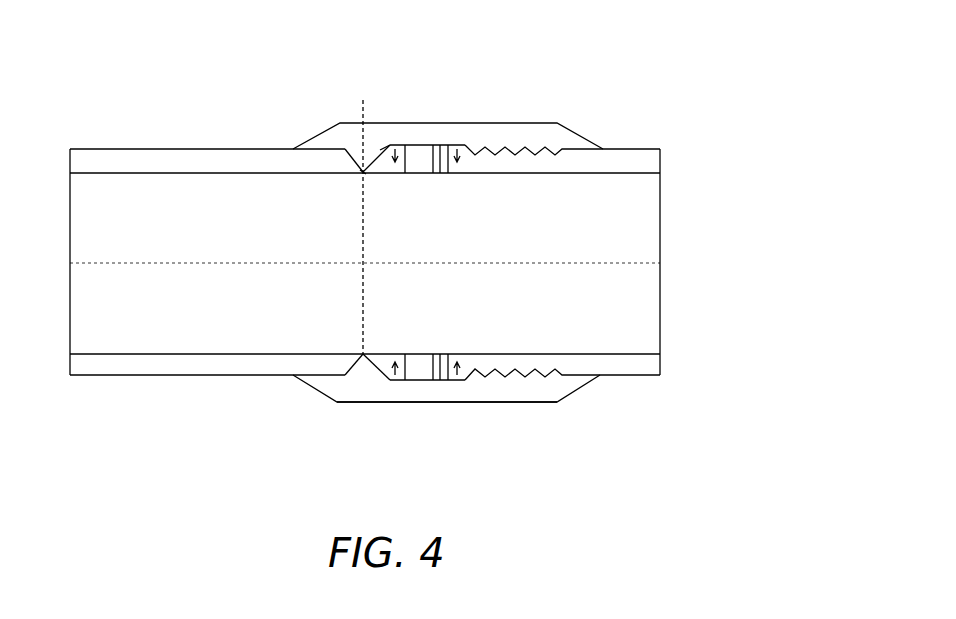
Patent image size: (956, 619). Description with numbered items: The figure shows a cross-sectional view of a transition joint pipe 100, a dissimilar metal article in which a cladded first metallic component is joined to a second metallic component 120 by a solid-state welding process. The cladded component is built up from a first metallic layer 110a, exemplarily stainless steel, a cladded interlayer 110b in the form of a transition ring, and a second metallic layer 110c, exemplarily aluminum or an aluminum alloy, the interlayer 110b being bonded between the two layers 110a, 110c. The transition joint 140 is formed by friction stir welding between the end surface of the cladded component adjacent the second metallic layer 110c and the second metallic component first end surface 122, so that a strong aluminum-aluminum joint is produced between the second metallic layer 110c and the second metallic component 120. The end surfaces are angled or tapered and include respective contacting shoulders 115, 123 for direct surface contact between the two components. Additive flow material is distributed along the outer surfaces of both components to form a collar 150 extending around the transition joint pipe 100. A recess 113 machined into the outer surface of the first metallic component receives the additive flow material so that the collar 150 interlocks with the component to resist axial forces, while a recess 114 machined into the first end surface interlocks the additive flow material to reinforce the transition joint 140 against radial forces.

The transition joint pipe 100 is at (685, 137).
The first metallic layer 110a is at (545, 377).
The cladded interlayer 110b is at (425, 378).
The second metallic layer 110c is at (396, 160).
The recess 113 is at (508, 148).
The recess 114 is at (380, 150).
The contacting shoulder 115 is at (363, 172).
The second metallic component 120 is at (237, 378).
The second metallic component first end surface 122 is at (363, 172).
The contacting shoulder 123 is at (363, 172).
The transition joint 140 is at (370, 209).
The collar 150 is at (362, 402).